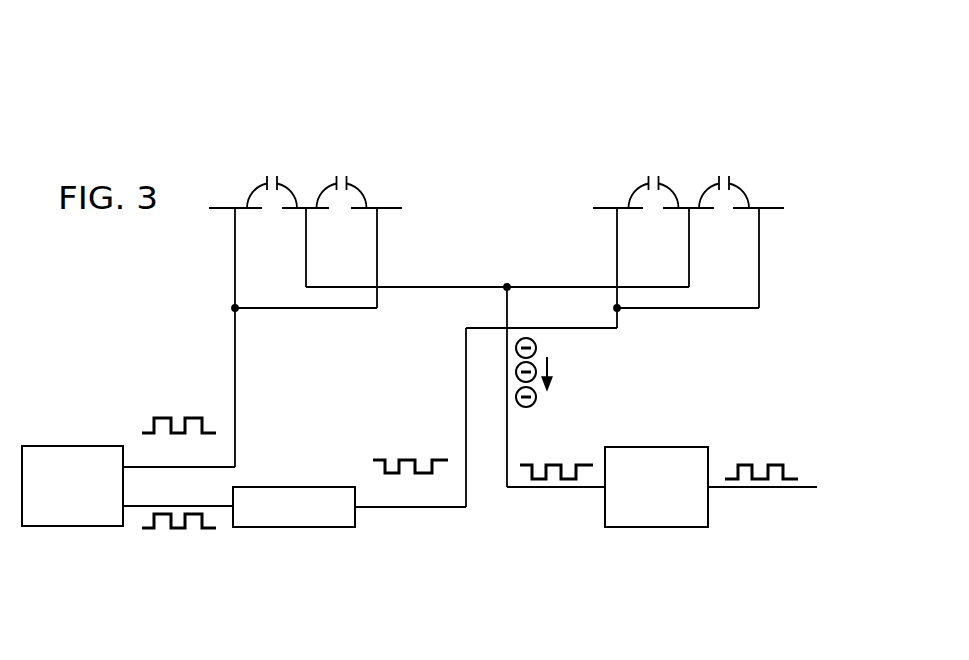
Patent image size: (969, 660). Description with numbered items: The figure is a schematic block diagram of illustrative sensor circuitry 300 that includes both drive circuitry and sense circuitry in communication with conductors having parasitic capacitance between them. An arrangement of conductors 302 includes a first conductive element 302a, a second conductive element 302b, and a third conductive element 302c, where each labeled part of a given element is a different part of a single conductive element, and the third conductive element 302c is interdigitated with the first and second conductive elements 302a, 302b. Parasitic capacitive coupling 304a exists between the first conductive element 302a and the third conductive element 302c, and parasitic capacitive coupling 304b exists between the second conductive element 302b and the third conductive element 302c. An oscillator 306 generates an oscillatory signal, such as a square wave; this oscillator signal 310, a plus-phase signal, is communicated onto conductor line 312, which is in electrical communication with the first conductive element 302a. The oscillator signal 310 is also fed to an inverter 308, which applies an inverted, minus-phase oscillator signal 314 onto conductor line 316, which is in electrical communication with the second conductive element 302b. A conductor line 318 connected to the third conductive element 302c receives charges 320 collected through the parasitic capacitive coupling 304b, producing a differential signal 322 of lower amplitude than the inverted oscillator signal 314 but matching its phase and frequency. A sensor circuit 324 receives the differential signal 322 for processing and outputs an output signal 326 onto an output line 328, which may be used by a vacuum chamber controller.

The capacitive sensor system 300 is at (689, 179).
The electrode assembly 302 is at (445, 179).
The first conductive element 302a is at (221, 210).
The second conductive element 302b is at (603, 210).
The third conductive element 302c is at (290, 210).
The parasitic capacitive coupling 304a is at (252, 190).
The parasitic capacitive coupling 304b is at (633, 190).
The oscillator 306 is at (72, 528).
The inverter 308 is at (296, 528).
The oscillator signal 310 is at (168, 417).
The conductor line 312 is at (235, 350).
The inverted oscillator signal 314 is at (384, 459).
The conductor line 316 is at (466, 380).
The conductor line 318 is at (556, 489).
The charges 320 is at (584, 372).
The differential signal 322 is at (556, 464).
The sensor circuit 324 is at (656, 529).
The output signal 326 is at (778, 464).
The output line 328 is at (770, 489).